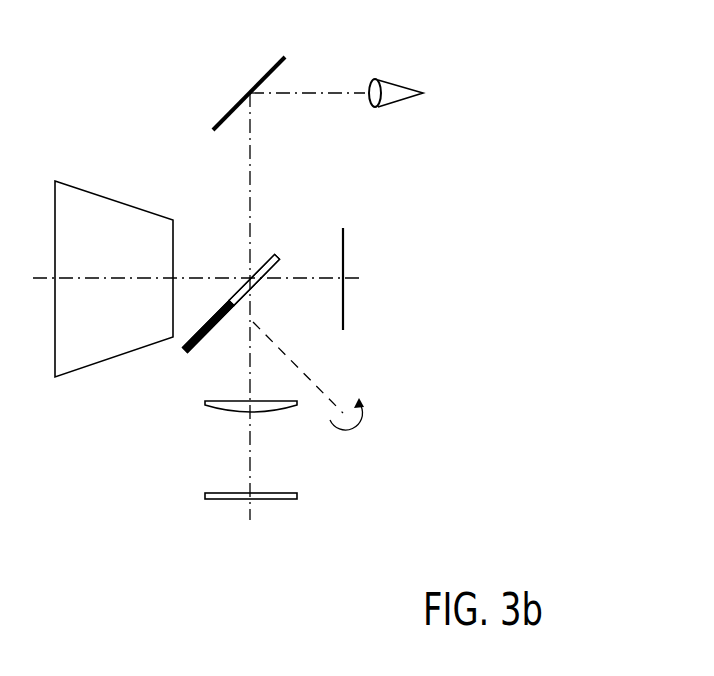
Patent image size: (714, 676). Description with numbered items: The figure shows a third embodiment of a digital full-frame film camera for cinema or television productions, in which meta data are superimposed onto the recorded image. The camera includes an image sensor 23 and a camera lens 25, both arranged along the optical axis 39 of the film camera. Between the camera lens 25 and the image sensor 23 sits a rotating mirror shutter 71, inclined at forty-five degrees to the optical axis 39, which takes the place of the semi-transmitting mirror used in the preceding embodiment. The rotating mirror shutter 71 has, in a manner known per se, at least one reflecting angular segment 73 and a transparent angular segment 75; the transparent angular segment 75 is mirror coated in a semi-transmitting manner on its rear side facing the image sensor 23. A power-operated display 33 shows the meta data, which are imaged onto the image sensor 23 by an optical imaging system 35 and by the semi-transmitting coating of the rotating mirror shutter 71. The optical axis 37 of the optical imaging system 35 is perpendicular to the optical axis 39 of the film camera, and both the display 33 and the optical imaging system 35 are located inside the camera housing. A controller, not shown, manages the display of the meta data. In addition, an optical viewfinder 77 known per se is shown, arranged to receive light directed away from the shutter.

The image sensor 23 is at (348, 305).
The camera lens 25 is at (88, 208).
The display 33 is at (222, 500).
The optical imaging system 35 is at (222, 413).
The optical axis of the optical imaging system 37 is at (251, 445).
The optical axis of the film camera 39 is at (190, 278).
The rotating mirror shutter 71 is at (281, 228).
The reflecting angular segment 73 is at (205, 343).
The transparent angular segment 75 is at (262, 288).
The optical viewfinder 77 is at (398, 79).